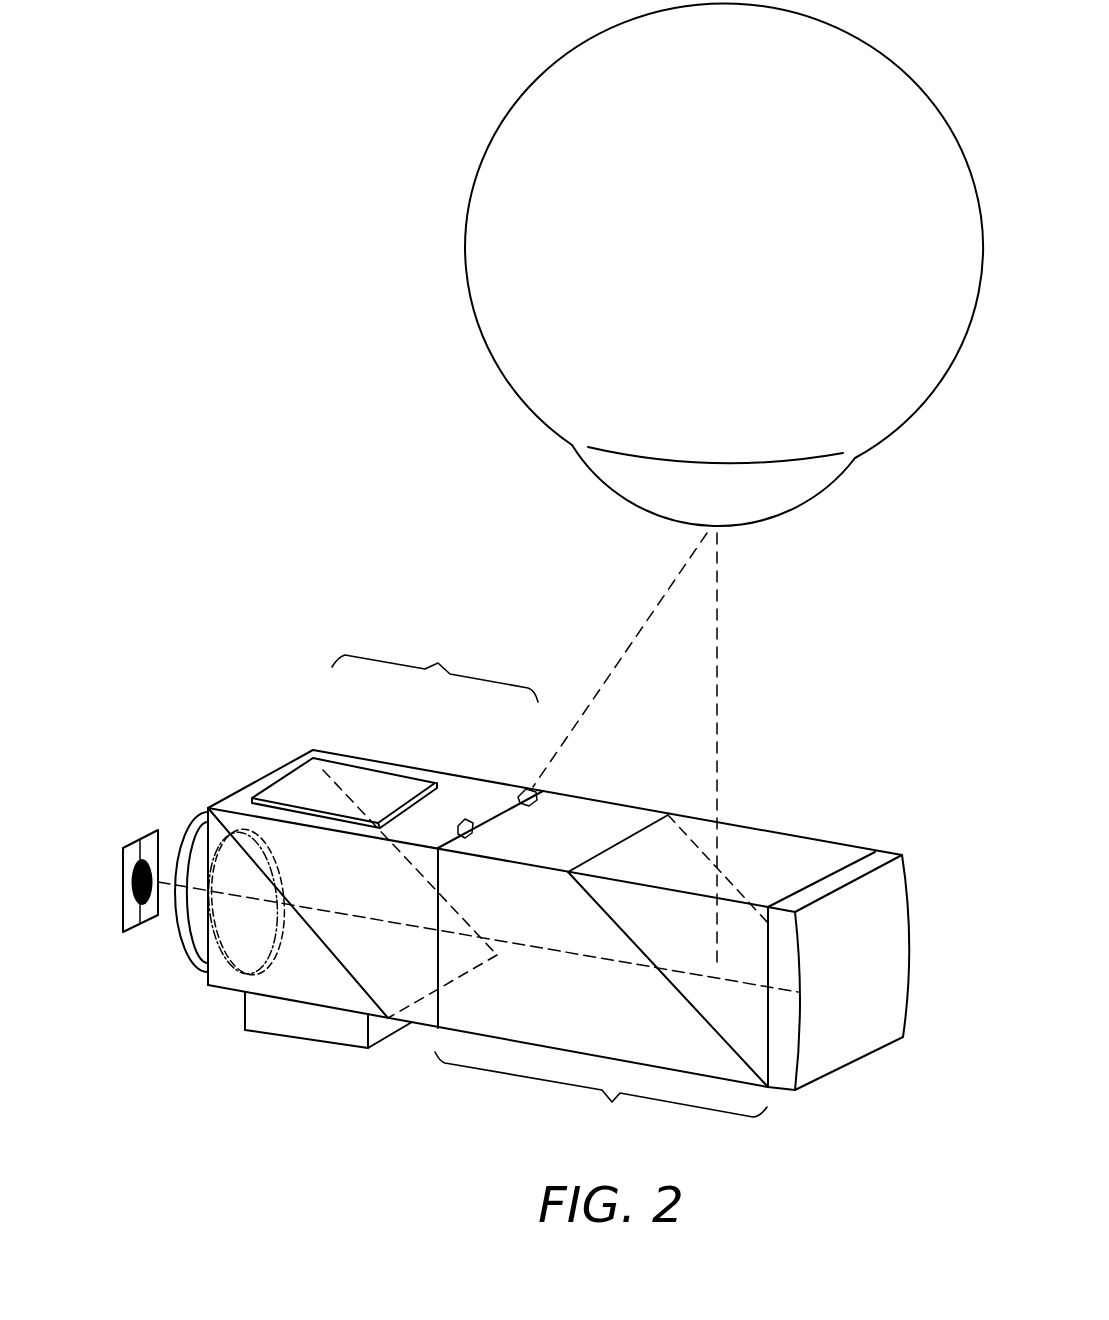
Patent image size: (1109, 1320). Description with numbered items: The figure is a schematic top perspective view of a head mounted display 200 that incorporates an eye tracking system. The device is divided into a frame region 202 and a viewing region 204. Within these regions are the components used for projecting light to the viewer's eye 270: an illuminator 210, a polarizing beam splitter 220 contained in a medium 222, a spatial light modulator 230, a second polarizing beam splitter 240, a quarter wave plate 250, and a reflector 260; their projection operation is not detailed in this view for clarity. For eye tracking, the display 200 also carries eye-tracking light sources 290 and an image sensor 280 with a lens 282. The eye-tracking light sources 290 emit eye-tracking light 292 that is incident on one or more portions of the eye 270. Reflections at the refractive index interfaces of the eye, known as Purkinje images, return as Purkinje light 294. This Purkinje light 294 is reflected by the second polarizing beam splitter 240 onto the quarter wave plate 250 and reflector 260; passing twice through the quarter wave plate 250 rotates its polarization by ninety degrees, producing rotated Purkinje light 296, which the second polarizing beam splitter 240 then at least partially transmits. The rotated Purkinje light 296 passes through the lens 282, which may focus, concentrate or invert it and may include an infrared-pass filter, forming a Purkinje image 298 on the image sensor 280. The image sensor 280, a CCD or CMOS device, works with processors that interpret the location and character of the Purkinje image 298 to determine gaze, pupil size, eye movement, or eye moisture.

The head mounted display 200 is at (863, 1133).
The frame region 202 is at (435, 666).
The viewing region 204 is at (601, 1097).
The illuminator 210 is at (268, 1018).
The polarizing beam splitter 220 is at (240, 800).
The medium 222 is at (223, 980).
The spatial light modulator 230 is at (387, 783).
The second polarizing beam splitter 240 is at (648, 842).
The quarter wave plate 250 is at (852, 872).
The reflector 260 is at (880, 898).
The eye 270 is at (546, 433).
The image sensor 280 is at (148, 830).
The lens 282 is at (185, 937).
The eye-tracking light sources 290 is at (527, 787).
The eye-tracking light 292 is at (633, 643).
The Purkinje light 294 is at (718, 643).
The rotated Purkinje light 296 is at (510, 945).
The Purkinje image 298 is at (131, 883).